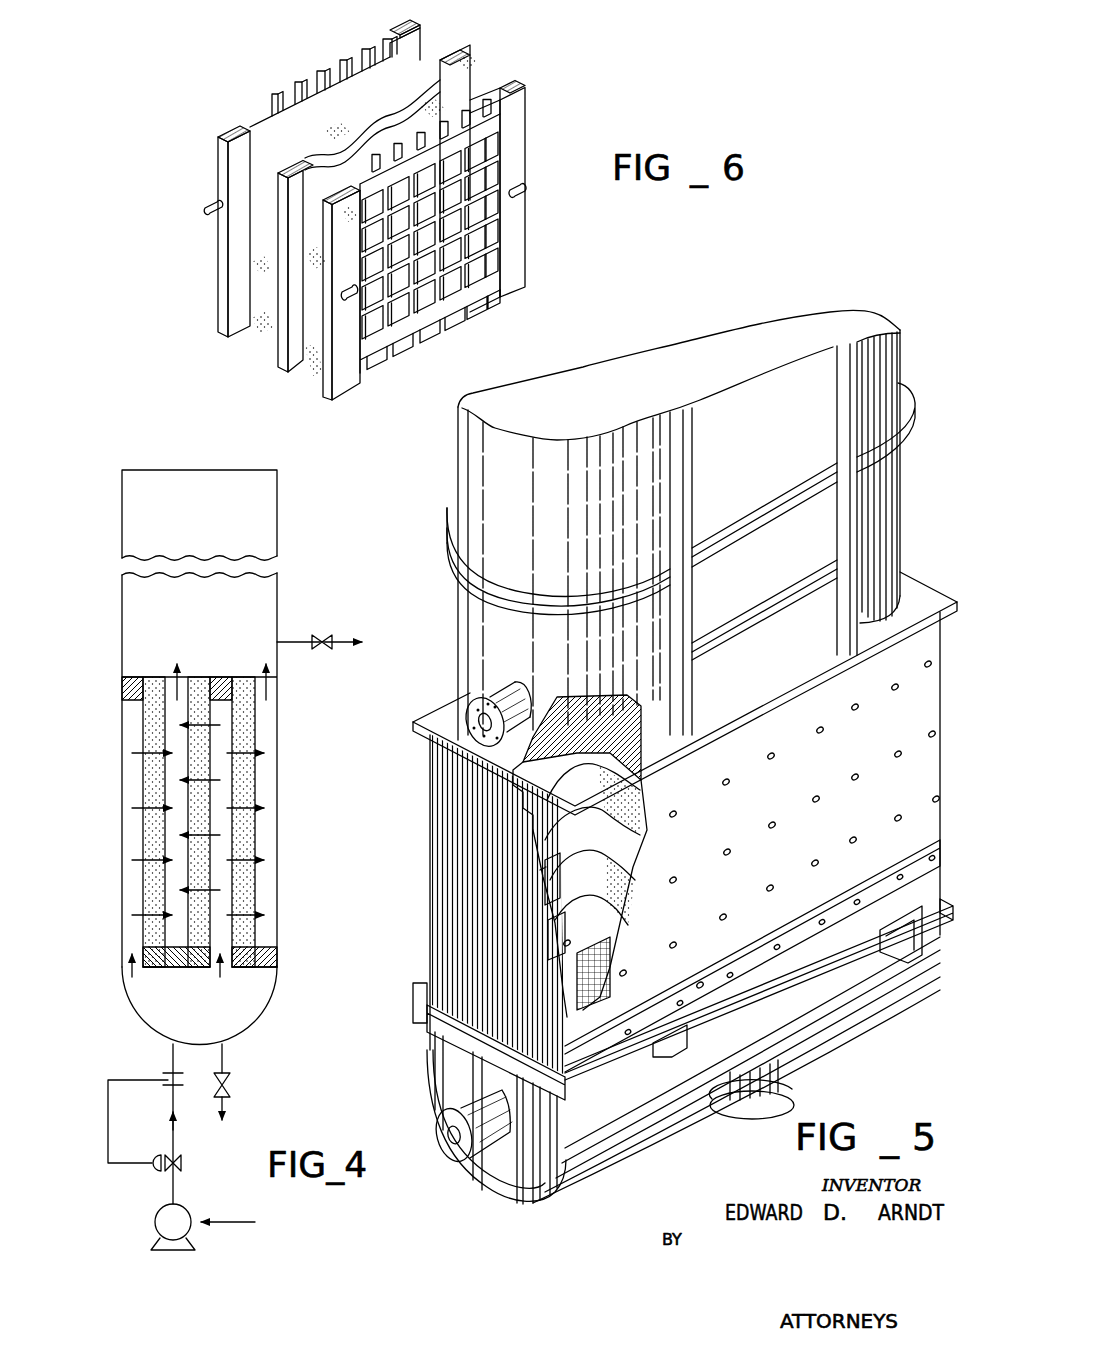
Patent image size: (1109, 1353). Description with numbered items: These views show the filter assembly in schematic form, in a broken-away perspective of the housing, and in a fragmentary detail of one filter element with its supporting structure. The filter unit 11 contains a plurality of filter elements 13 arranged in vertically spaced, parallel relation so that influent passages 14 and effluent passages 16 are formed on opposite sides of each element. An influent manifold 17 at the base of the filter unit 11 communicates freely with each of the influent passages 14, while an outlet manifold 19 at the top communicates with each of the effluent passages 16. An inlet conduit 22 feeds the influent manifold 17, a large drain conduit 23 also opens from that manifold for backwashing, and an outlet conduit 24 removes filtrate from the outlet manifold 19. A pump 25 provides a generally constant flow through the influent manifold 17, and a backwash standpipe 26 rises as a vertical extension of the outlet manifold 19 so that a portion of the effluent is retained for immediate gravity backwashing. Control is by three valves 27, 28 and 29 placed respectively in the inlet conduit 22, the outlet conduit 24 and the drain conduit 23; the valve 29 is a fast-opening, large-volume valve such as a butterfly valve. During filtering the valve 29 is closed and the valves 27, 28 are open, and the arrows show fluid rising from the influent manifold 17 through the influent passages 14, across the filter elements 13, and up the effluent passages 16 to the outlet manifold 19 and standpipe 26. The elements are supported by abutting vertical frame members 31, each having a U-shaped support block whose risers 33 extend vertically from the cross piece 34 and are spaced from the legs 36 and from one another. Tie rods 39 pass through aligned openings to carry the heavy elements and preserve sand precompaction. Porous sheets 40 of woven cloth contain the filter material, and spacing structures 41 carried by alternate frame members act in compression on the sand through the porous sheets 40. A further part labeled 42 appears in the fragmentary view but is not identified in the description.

In FIG. 4, the filter unit 11 is at (108, 793).
In FIG. 5, the filter unit 11 is at (418, 795).
In FIG. 4, the filter elements 13 is at (246, 790).
In FIG. 6, the filter elements 13 is at (343, 146).
In FIG. 5, the filter elements 13 is at (583, 870).
In FIG. 4, the influent passages 14 is at (128, 961).
In FIG. 4, the effluent passages 16 is at (182, 666).
In FIG. 4, the influent manifold 17 is at (146, 1004).
In FIG. 4, the outlet manifold 19 is at (140, 642).
In FIG. 4, the inlet conduit 22 is at (170, 1189).
In FIG. 5, the inlet conduit 22 is at (472, 1156).
In FIG. 4, the drain conduit 23 is at (226, 1064).
In FIG. 4, the outlet conduit 24 is at (368, 642).
In FIG. 5, the outlet conduit 24 is at (512, 703).
In FIG. 4, the pump 25 is at (155, 1228).
In FIG. 4, the backwash standpipe 26 is at (132, 530).
In FIG. 5, the backwash standpipe 26 is at (484, 482).
In FIG. 4, the valve 27 is at (182, 1162).
In FIG. 4, the valve 28 is at (326, 638).
In FIG. 4, the valve 29 is at (226, 1093).
In FIG. 4, the frame members 31 is at (152, 968).
In FIG. 6, the risers 33 is at (480, 57).
In FIG. 5, the risers 33 is at (646, 818).
In FIG. 4, the cross piece 34 is at (130, 687).
In FIG. 6, the legs 36 is at (323, 397).
In FIG. 5, the legs 36 is at (562, 960).
In FIG. 6, the tie rods 39 is at (210, 207).
In FIG. 6, the porous sheets 40 is at (307, 274).
In FIG. 6, the spacing structures 41 is at (485, 240).
In FIG. 5, the spacing structures 41 is at (600, 934).
In FIG. 6, the comb spacer plate 42 is at (373, 61).